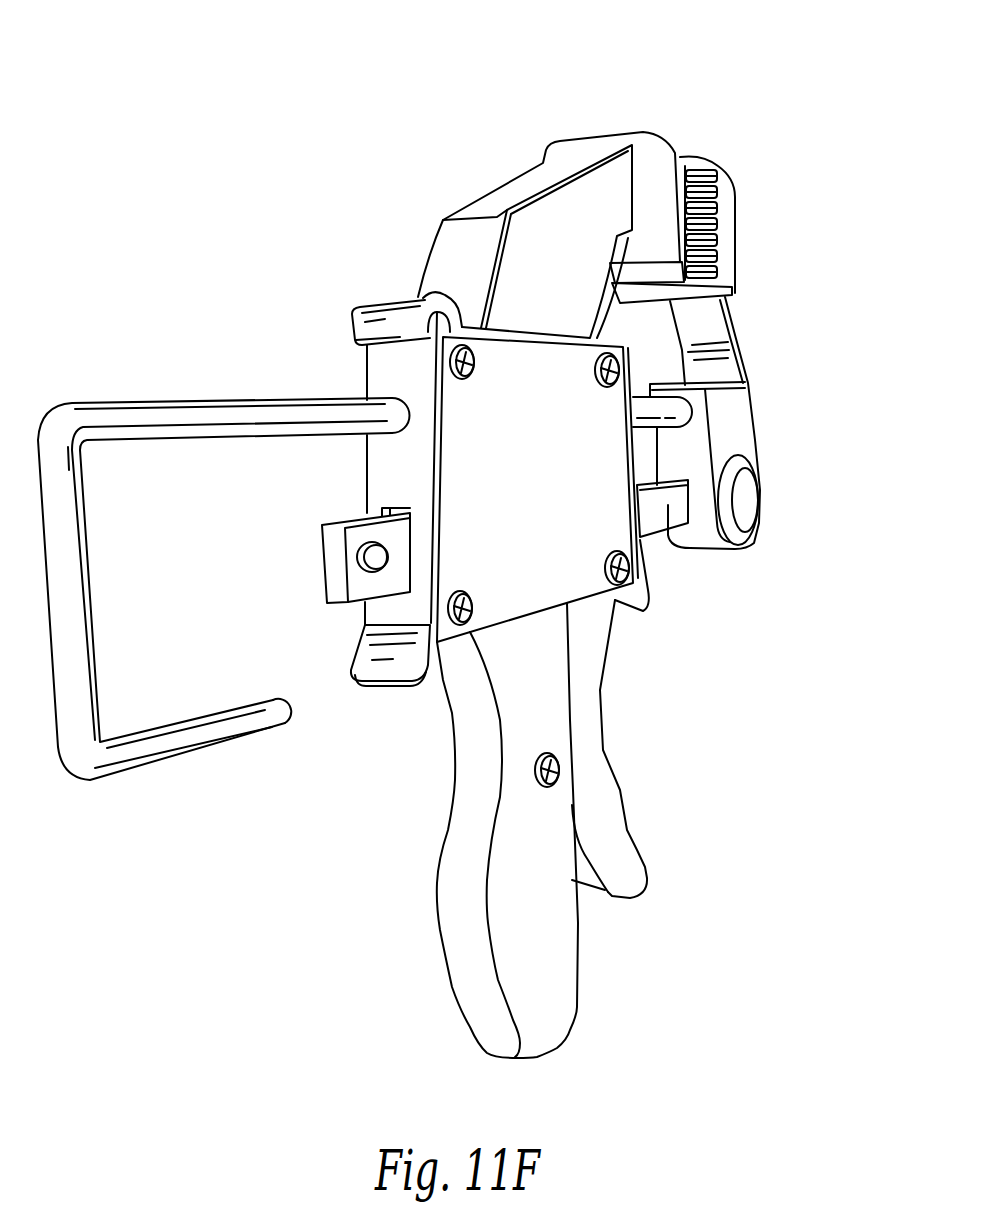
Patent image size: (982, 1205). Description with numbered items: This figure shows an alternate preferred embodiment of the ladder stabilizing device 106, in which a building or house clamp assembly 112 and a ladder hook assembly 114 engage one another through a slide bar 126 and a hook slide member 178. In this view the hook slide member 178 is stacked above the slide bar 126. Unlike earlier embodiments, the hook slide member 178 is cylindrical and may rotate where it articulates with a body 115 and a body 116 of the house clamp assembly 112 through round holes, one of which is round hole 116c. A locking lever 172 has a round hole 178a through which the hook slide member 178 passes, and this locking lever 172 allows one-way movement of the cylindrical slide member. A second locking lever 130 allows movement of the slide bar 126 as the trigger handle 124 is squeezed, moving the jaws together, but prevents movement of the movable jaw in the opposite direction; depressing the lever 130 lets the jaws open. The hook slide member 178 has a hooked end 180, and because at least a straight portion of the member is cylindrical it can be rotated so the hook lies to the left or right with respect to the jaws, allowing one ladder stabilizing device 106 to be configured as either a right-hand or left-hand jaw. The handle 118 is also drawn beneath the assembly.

The ladder stabilizing device 106 is at (771, 566).
The house clamp assembly 112 is at (722, 126).
The ladder hook assembly 114 is at (334, 467).
The body 115 is at (757, 443).
The body 116 is at (470, 202).
The round hole 116c is at (693, 415).
The handle 118 is at (682, 911).
The trigger handle 124 is at (617, 797).
The slide bar 126 is at (657, 527).
The locking lever 130 is at (640, 622).
The locking lever 172 is at (402, 690).
The hook slide member 178 is at (227, 401).
The round hole 178a is at (393, 398).
The hooked end 180 is at (250, 744).